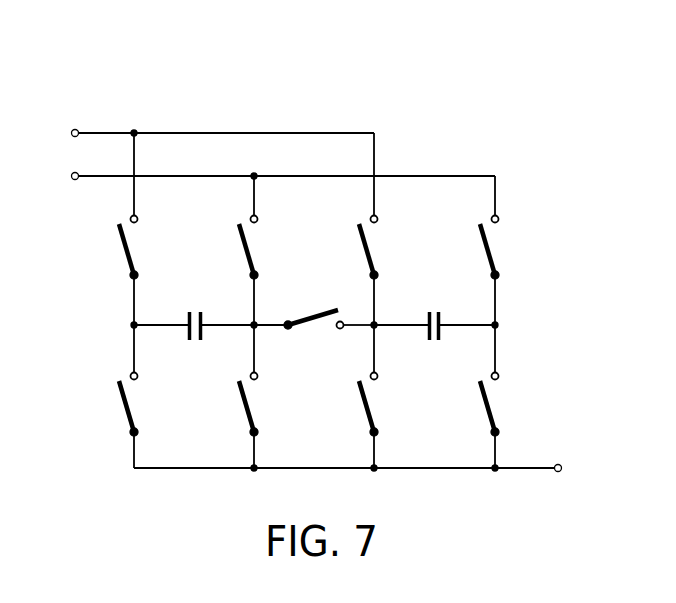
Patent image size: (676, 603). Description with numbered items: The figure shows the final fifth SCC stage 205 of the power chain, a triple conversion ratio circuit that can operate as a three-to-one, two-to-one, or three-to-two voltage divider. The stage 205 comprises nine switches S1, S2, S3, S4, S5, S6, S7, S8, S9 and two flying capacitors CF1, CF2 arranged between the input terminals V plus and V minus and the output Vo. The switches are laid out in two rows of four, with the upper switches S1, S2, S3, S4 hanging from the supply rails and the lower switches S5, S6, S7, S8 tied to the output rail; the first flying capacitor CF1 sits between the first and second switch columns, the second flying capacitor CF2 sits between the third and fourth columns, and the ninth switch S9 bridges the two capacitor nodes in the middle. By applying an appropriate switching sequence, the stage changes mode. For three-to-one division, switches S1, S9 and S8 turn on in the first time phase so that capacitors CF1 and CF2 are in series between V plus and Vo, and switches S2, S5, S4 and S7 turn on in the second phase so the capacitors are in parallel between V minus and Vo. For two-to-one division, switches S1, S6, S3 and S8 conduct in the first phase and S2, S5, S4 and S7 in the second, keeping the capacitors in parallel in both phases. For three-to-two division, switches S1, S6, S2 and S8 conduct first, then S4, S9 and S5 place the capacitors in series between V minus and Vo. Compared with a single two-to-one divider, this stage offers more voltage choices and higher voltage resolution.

The final fifth SCC stage 205 is at (105, 70).
The switch S1 is at (146, 248).
The switch S2 is at (266, 248).
The switch S3 is at (386, 248).
The switch S4 is at (507, 248).
The switch S5 is at (146, 405).
The switch S6 is at (266, 405).
The switch S7 is at (386, 405).
The switch S8 is at (507, 405).
The switch S9 is at (314, 332).
The flying capacitor CF1 is at (194, 311).
The flying capacitor CF2 is at (434, 311).